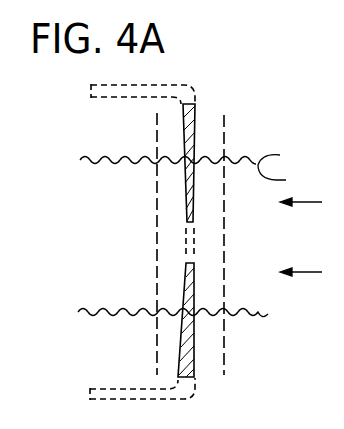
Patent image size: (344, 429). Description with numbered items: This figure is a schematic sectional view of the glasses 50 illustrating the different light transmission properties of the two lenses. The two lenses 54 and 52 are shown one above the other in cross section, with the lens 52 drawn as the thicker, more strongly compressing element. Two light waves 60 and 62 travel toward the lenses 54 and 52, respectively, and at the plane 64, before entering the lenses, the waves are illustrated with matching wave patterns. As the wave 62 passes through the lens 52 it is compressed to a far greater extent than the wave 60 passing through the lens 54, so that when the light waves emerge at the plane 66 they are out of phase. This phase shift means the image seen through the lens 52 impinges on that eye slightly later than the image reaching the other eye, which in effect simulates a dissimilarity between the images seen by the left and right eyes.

The glasses 50 is at (208, 97).
The lens 52 is at (197, 348).
The lens 54 is at (196, 130).
The light wave 60 is at (201, 180).
The light wave 62 is at (252, 306).
The plane 64 is at (228, 147).
The plane 66 is at (157, 143).